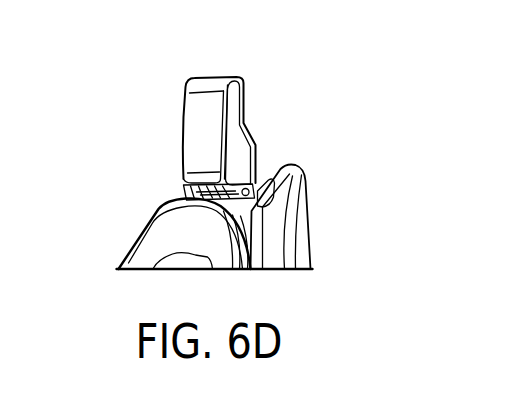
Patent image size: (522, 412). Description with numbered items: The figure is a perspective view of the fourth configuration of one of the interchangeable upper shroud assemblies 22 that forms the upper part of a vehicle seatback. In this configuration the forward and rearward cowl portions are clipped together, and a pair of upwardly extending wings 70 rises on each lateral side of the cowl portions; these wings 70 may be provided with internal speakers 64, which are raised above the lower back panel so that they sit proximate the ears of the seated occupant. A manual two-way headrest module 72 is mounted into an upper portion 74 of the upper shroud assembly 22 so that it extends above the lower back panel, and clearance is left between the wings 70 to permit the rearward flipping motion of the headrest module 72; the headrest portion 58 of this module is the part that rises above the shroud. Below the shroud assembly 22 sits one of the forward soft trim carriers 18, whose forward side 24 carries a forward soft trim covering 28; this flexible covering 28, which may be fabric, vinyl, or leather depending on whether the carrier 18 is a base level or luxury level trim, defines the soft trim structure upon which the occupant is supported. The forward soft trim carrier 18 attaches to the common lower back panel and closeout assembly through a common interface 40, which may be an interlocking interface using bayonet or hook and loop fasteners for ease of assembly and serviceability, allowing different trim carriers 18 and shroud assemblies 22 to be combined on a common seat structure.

The interchangeable upper shroud assembly 22 is at (98, 138).
The headrest 58 is at (203, 127).
The manual two-way headrest module 72 is at (237, 100).
The upwardly extending wings 70 is at (290, 168).
The internal speakers 64 is at (267, 193).
The upper portion 74 is at (186, 184).
The forward soft trim covering 28 is at (162, 236).
The forward side 24 is at (132, 261).
The forward soft trim carrier 18 is at (210, 253).
The common interface 40 is at (263, 247).